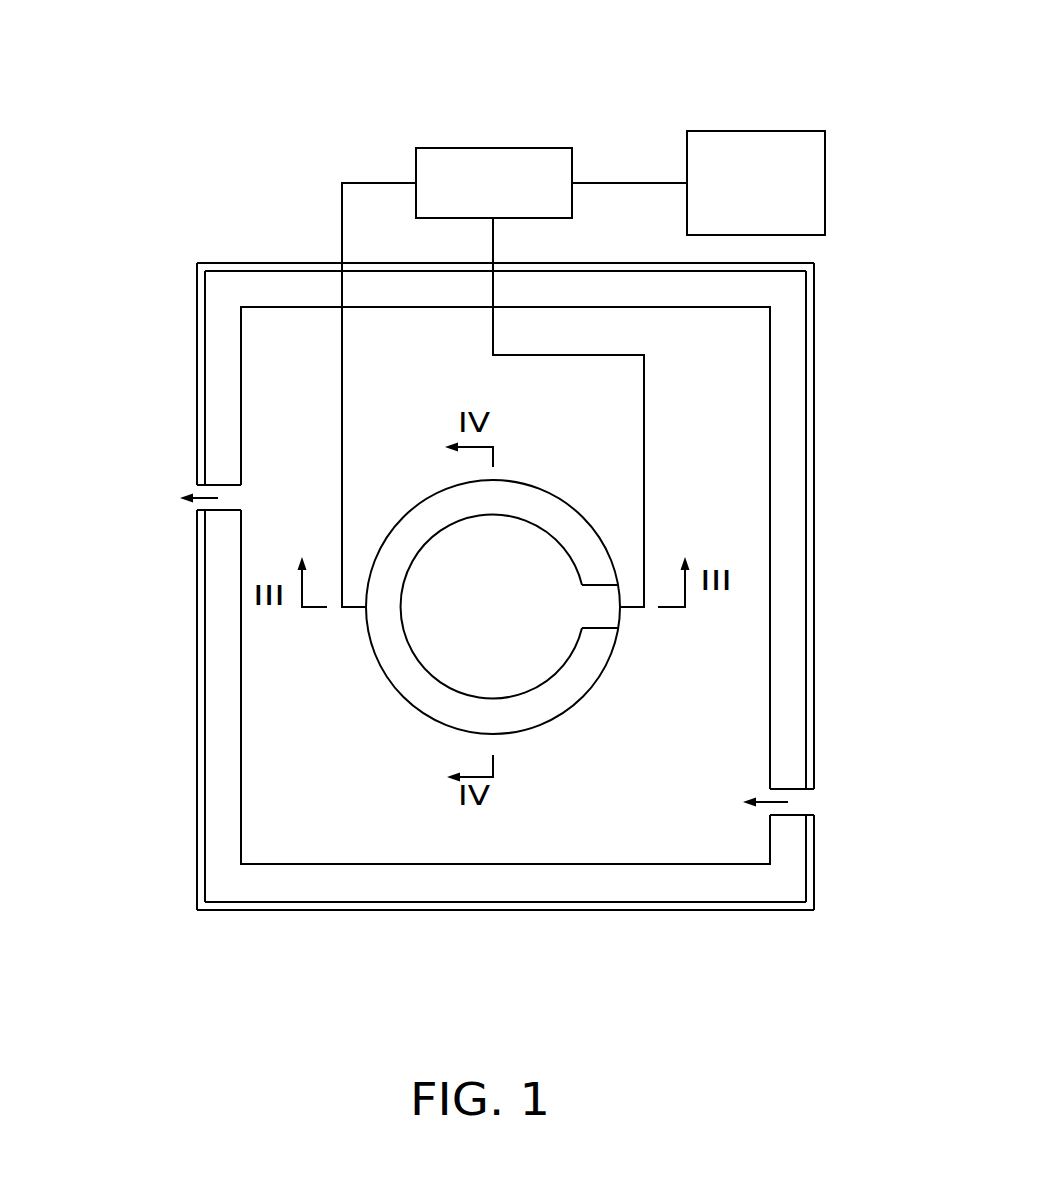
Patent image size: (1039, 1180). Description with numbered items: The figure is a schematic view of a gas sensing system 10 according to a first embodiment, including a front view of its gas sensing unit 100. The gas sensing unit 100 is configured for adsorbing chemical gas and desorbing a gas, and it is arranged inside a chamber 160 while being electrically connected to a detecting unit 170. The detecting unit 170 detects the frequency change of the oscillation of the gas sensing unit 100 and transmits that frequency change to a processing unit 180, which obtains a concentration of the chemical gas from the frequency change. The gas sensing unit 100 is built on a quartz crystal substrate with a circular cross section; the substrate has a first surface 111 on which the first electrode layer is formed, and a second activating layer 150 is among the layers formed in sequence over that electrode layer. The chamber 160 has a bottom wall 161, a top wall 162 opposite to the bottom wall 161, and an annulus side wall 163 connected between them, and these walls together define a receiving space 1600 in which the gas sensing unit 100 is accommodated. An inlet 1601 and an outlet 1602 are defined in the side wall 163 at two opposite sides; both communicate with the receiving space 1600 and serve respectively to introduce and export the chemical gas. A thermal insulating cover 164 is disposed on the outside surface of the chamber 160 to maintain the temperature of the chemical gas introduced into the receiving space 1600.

The gas sensing system 10 is at (409, 60).
The gas sensing unit 100 is at (588, 717).
The first surface 111 is at (460, 710).
The second activating layer 150 is at (452, 628).
The chamber 160 is at (103, 785).
The bottom wall 161 is at (308, 882).
The top wall 162 is at (294, 283).
The side wall 163 is at (220, 442).
The thermal insulating cover 164 is at (810, 318).
The receiving space 1600 is at (730, 381).
The inlet 1601 is at (805, 802).
The outlet 1602 is at (240, 493).
The detecting unit 170 is at (475, 172).
The processing unit 180 is at (757, 150).